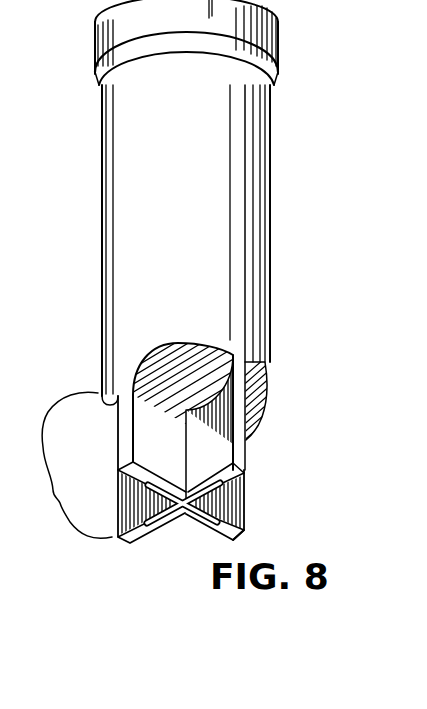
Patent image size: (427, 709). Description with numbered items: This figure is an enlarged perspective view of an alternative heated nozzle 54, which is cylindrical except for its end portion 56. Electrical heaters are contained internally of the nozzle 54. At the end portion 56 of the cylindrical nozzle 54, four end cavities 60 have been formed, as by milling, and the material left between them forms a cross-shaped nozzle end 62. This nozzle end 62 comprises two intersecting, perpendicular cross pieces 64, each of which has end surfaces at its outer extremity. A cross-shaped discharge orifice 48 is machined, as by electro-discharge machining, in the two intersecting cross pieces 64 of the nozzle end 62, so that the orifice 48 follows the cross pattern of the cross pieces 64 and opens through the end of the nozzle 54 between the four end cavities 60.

The heated nozzle 54 is at (282, 223).
The end portion 56 is at (67, 465).
The end cavities 60 is at (243, 494).
The cross-shaped nozzle end 62 is at (143, 532).
The cross pieces 64 is at (200, 458).
The cross-shaped discharge orifice 48 is at (244, 474).